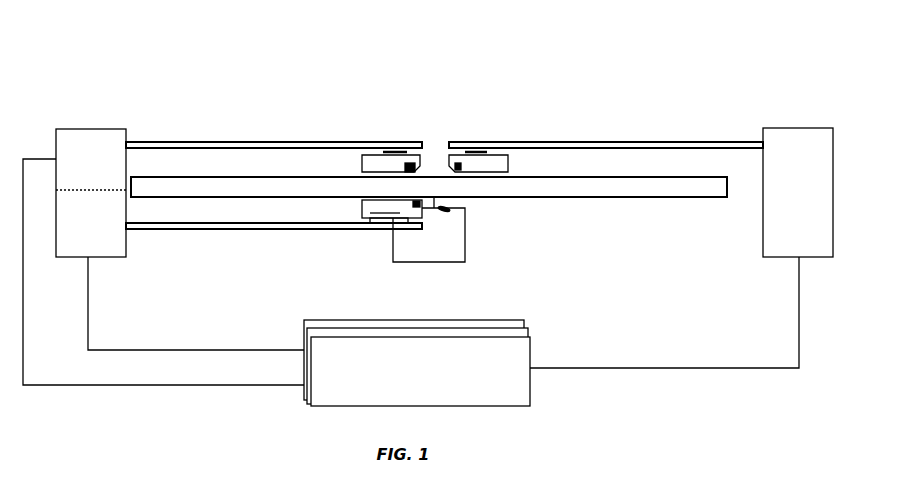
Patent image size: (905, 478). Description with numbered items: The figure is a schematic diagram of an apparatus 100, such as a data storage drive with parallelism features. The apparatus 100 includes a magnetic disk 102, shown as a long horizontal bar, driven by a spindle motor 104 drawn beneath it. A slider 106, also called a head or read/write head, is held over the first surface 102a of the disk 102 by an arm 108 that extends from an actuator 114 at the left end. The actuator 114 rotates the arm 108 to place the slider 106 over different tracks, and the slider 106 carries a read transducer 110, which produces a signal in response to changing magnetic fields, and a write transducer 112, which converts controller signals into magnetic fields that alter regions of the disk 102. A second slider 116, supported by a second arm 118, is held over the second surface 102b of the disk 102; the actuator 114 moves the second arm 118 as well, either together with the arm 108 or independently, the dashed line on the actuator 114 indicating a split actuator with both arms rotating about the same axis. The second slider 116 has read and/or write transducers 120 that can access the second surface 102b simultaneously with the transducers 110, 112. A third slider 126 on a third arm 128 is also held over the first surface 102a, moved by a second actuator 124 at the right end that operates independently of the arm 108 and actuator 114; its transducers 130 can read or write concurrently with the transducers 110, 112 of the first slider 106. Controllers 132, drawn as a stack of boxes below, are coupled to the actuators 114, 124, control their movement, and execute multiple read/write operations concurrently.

The apparatus 100 is at (566, 70).
The magnetic disk 102 is at (688, 197).
The first surface 102a is at (590, 176).
The second surface 102b is at (618, 197).
The spindle motor 104 is at (407, 262).
The slider 106 is at (373, 164).
The arm 108 is at (255, 142).
The read transducer 110 is at (418, 154).
The write transducer 112 is at (410, 170).
The actuator 114 is at (83, 129).
The second slider 116 is at (372, 213).
The second arm 118 is at (242, 230).
The read and/or write transducers 120 is at (452, 206).
The second actuator 124 is at (790, 128).
The third slider 126 is at (480, 158).
The third arm 128 is at (618, 142).
The read and/or write transducers 130 is at (461, 168).
The controllers 132 is at (492, 332).